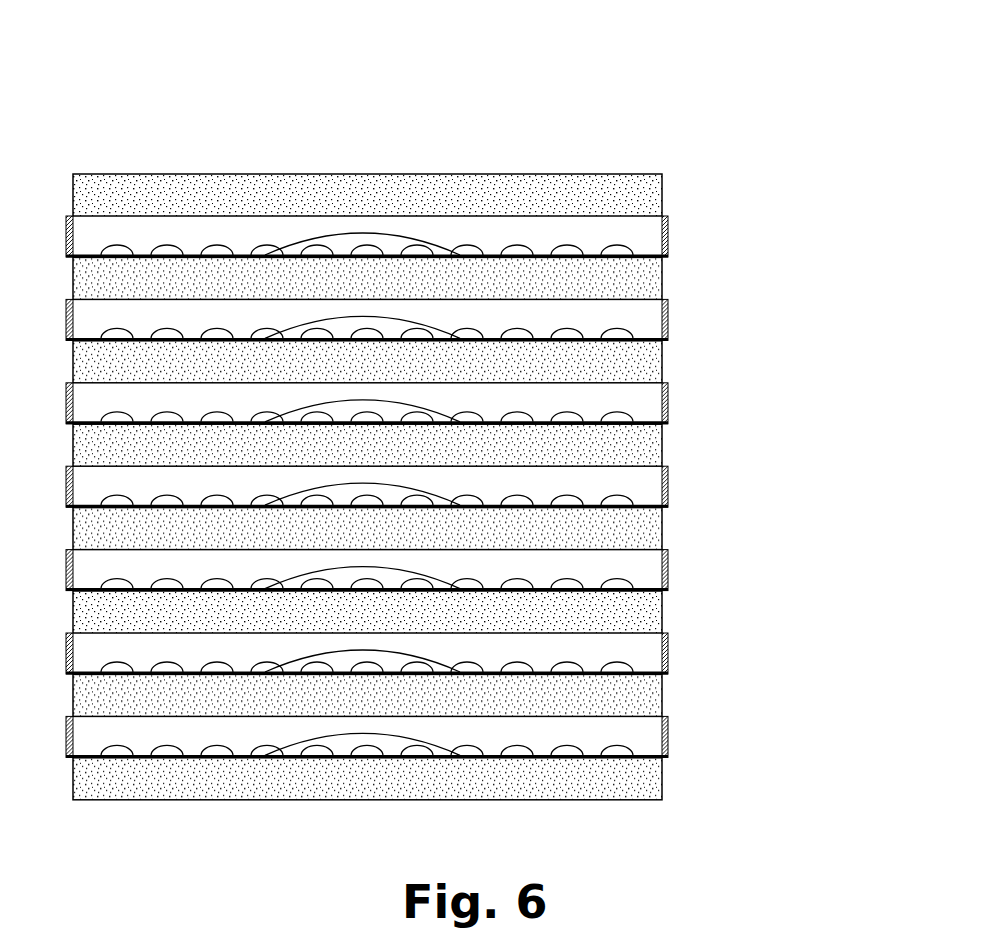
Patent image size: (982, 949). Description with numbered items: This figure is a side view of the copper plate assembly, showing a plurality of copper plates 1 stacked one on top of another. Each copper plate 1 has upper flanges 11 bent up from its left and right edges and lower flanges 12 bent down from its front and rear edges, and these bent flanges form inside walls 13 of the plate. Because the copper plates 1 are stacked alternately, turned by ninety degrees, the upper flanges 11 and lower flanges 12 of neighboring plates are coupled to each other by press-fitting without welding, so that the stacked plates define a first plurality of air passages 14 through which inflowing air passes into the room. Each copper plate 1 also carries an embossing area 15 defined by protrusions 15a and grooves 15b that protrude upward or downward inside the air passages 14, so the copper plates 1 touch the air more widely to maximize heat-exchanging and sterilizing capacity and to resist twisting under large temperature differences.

The copper plate 1 is at (467, 406).
The upper flanges 11 is at (667, 405).
The lower flanges 12 is at (667, 490).
The inside walls 13 is at (642, 275).
The first plurality of air passages 14 is at (642, 323).
The embossing area 15 is at (351, 134).
The protrusions 15a is at (265, 240).
The grooves 15b is at (148, 243).